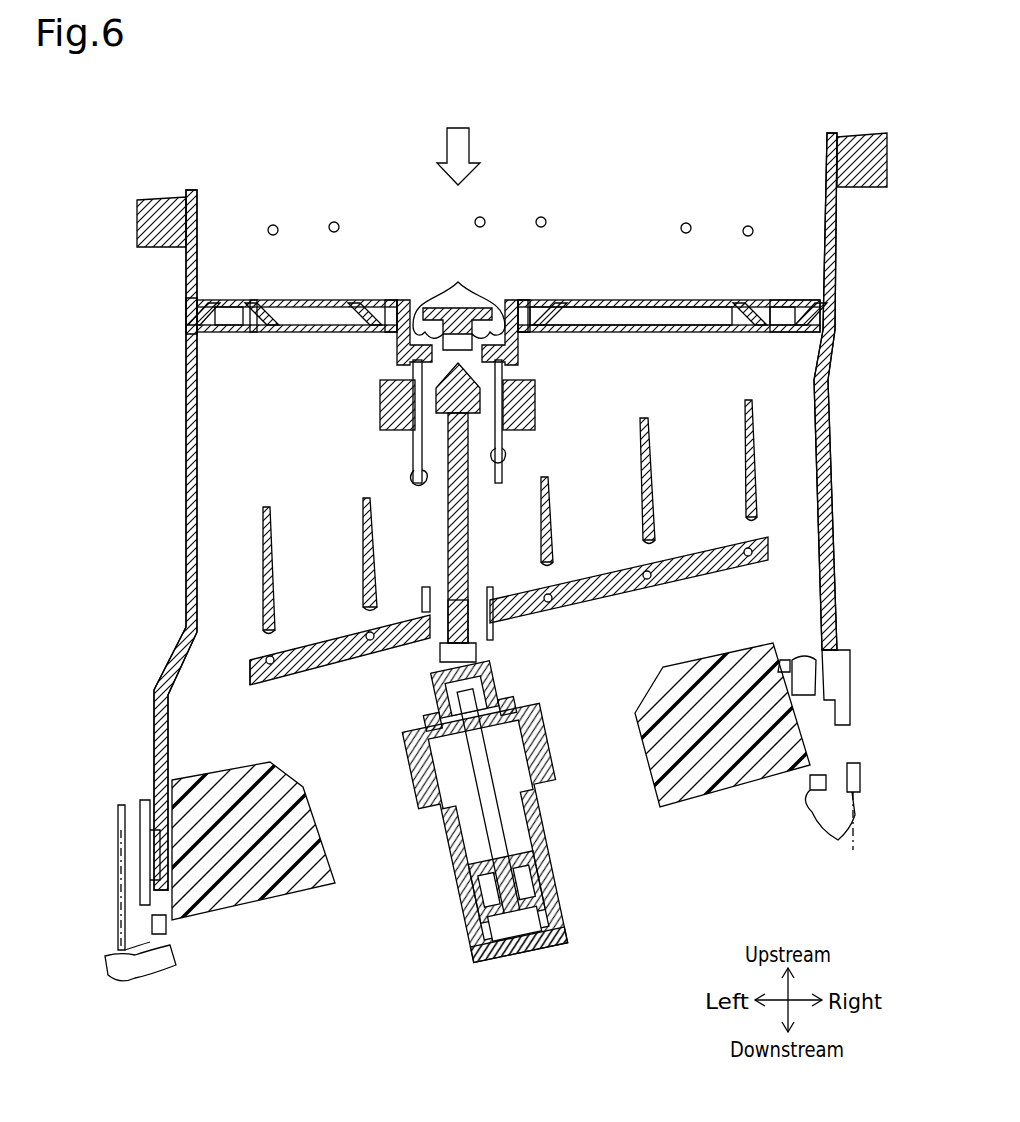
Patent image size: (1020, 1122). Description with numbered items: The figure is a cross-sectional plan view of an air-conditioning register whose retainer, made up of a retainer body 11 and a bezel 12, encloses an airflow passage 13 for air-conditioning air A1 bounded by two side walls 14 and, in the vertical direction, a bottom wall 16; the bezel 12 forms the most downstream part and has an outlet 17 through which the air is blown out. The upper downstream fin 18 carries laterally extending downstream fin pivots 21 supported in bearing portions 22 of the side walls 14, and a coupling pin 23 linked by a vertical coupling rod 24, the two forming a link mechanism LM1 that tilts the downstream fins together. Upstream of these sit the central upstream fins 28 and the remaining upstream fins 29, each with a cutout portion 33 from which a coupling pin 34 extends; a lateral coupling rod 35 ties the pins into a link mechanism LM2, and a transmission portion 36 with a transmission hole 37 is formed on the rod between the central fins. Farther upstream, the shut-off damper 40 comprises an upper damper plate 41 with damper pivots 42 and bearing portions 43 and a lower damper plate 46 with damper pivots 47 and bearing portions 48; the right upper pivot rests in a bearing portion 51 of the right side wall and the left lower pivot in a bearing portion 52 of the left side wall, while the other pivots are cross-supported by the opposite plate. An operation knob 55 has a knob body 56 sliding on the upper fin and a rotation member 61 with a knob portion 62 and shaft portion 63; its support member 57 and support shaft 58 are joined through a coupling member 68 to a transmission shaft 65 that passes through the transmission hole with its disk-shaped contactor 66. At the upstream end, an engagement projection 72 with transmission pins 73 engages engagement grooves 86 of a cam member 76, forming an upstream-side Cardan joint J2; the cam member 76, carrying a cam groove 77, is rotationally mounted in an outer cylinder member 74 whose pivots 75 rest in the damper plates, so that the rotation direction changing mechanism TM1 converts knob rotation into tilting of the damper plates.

The retainer body 11 is at (837, 462).
The bezel 12 is at (155, 972).
The airflow passage 13 is at (198, 238).
The side walls 14 is at (186, 462).
The bottom wall 16 is at (217, 353).
The outlet 17 is at (180, 950).
The upper downstream fin 18 is at (700, 806).
The downstream fin pivots 21 is at (848, 756).
The bearing portions 22 is at (170, 926).
The coupling pin 23 is at (832, 690).
The vertical coupling rod 24 is at (790, 658).
The central upstream fins 28 is at (364, 526).
The upstream fins 29 is at (265, 556).
The cutout portion 33 is at (263, 630).
The coupling pin 34 is at (360, 682).
The lateral coupling rod 35 is at (250, 680).
The transmission portion 36 is at (493, 590).
The transmission hole 37 is at (426, 587).
The shut-off damper 40 is at (756, 248).
The upper damper plate 41 is at (792, 304).
The damper pivots 42 is at (253, 302).
The bearing portions 43 is at (381, 300).
The lower damper plate 46 is at (680, 302).
The damper pivots 47 is at (190, 318).
The bearing portions 48 is at (254, 332).
The bearing portion 51 is at (836, 296).
The bearing portion 52 is at (186, 300).
The operation knob 55 is at (494, 844).
The knob body 56 is at (422, 818).
The support member 57 is at (426, 688).
The support shaft 58 is at (470, 680).
The rotation member 61 is at (620, 830).
The knob portion 62 is at (548, 870).
The shaft portion 63 is at (500, 830).
The transmission shaft 65 is at (448, 500).
The contactor 66 is at (470, 580).
The coupling member 68 is at (465, 660).
The engagement projection 72 is at (492, 428).
The transmission pins 73 is at (397, 400).
The outer cylinder member 74 is at (522, 352).
The pivots 75 is at (368, 314).
The cam member 76 is at (414, 448).
The cam groove 77 is at (459, 303).
The engagement grooves 86 is at (412, 476).
The air-conditioning air A1 is at (471, 150).
The rotation direction changing mechanism TM1 is at (420, 262).
The upstream-side Cardan joint J2 is at (480, 470).
The link mechanism LM1 is at (804, 650).
The link mechanism LM2 is at (790, 550).